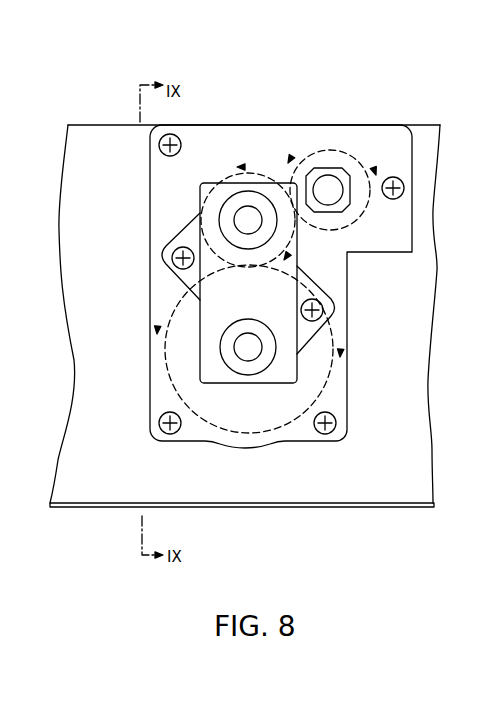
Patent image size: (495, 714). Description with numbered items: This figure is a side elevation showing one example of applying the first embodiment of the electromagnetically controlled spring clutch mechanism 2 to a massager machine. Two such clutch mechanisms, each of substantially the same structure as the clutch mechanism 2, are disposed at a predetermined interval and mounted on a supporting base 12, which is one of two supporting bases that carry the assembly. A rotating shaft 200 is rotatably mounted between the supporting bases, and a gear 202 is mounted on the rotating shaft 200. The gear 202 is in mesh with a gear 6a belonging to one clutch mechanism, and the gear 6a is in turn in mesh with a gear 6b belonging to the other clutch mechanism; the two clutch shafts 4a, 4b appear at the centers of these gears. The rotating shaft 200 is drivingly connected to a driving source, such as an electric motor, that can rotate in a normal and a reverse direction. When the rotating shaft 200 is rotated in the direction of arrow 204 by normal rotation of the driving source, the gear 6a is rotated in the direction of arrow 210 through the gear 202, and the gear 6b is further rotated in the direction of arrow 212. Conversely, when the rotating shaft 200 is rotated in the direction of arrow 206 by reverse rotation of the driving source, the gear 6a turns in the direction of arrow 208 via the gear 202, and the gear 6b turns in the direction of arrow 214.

The electromagnetically controlled spring clutch mechanism 2 is at (491, 236).
The supporting base 12 is at (424, 132).
The first pump shaft 4a is at (240, 218).
The second pump shaft 4b is at (250, 352).
The gear 6a is at (232, 180).
The gear 6b is at (333, 372).
The rotating shaft 200 is at (332, 197).
The gear 202 is at (330, 150).
The arrow 204 is at (290, 158).
The arrow 206 is at (375, 170).
The arrow 208 is at (246, 167).
The arrow 210 is at (299, 232).
The arrow 212 is at (158, 317).
The arrow 214 is at (342, 340).